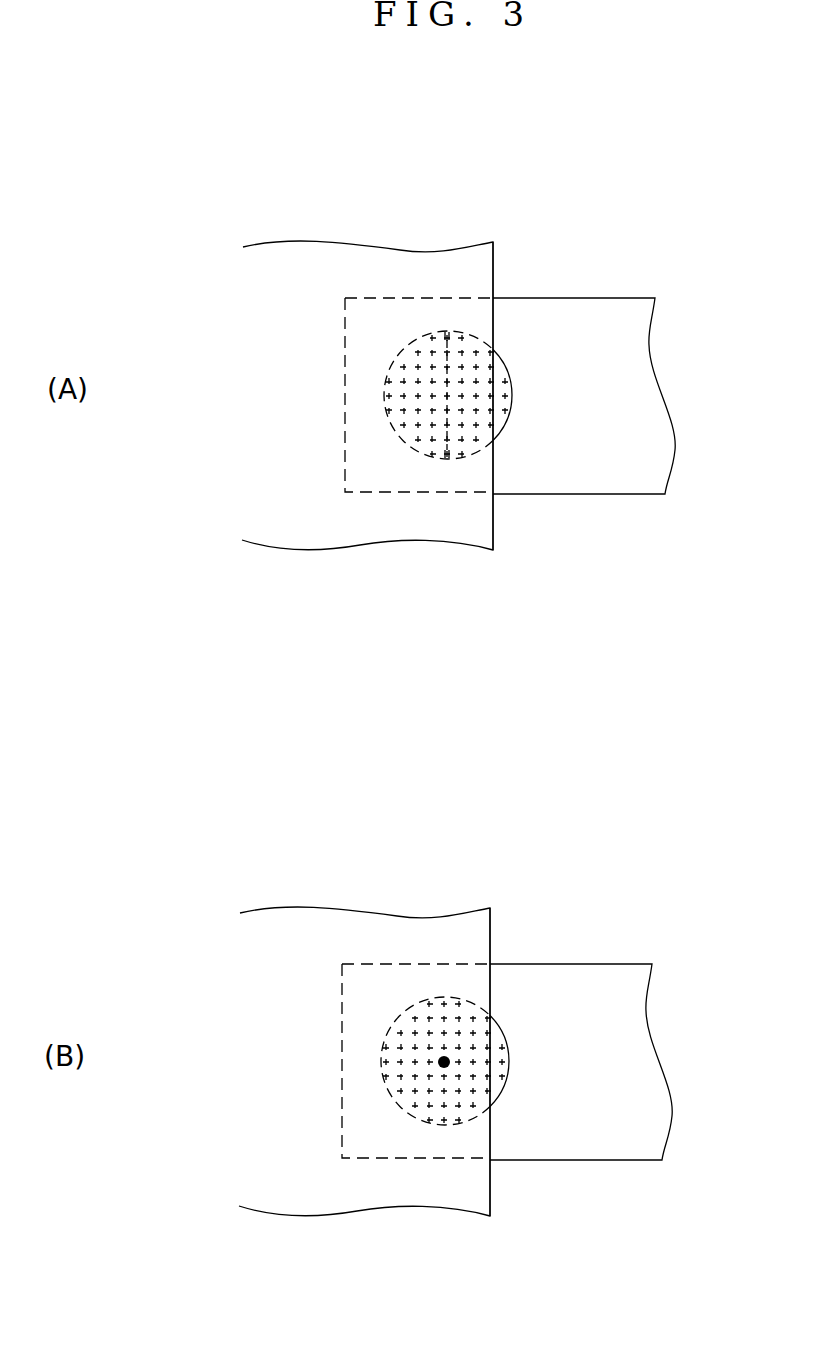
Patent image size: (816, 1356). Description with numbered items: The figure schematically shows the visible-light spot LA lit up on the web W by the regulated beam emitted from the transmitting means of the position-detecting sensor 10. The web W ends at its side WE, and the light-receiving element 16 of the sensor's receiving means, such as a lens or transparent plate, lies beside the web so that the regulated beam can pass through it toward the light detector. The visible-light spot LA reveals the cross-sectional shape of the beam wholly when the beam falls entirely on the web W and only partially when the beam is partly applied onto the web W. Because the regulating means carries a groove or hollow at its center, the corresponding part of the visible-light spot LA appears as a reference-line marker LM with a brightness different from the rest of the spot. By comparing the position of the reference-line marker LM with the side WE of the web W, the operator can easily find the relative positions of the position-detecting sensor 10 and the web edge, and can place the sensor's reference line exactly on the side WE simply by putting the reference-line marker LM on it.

The position-detecting sensor 10 is at (624, 252).
The light-receiving element 16 is at (502, 383).
The visible-light spot LA is at (397, 360).
The reference-line marker LM is at (447, 390).
The web W is at (377, 513).
The side of the web WE is at (493, 517).